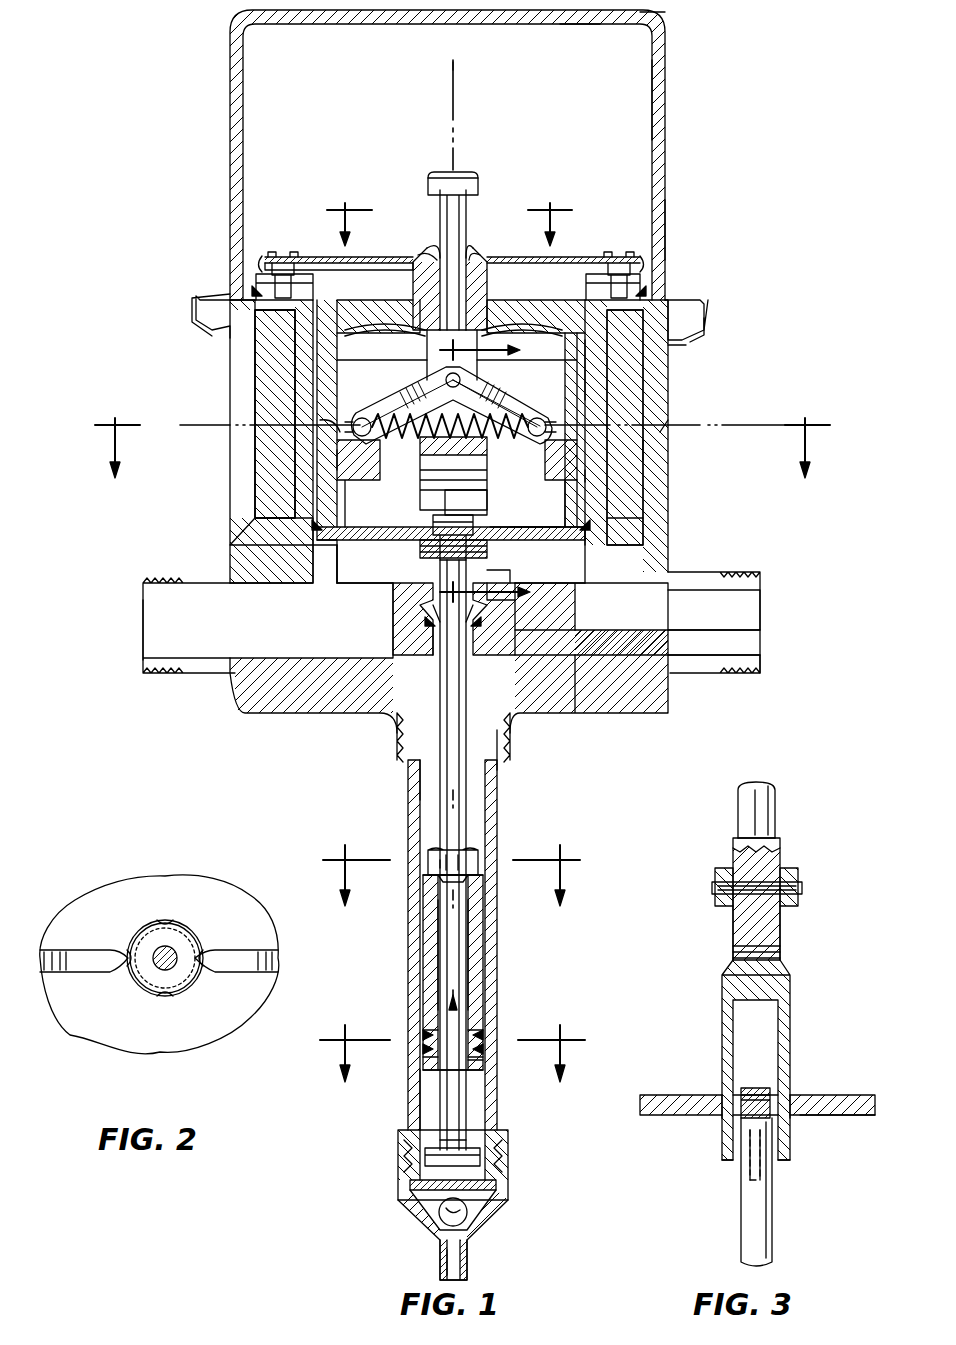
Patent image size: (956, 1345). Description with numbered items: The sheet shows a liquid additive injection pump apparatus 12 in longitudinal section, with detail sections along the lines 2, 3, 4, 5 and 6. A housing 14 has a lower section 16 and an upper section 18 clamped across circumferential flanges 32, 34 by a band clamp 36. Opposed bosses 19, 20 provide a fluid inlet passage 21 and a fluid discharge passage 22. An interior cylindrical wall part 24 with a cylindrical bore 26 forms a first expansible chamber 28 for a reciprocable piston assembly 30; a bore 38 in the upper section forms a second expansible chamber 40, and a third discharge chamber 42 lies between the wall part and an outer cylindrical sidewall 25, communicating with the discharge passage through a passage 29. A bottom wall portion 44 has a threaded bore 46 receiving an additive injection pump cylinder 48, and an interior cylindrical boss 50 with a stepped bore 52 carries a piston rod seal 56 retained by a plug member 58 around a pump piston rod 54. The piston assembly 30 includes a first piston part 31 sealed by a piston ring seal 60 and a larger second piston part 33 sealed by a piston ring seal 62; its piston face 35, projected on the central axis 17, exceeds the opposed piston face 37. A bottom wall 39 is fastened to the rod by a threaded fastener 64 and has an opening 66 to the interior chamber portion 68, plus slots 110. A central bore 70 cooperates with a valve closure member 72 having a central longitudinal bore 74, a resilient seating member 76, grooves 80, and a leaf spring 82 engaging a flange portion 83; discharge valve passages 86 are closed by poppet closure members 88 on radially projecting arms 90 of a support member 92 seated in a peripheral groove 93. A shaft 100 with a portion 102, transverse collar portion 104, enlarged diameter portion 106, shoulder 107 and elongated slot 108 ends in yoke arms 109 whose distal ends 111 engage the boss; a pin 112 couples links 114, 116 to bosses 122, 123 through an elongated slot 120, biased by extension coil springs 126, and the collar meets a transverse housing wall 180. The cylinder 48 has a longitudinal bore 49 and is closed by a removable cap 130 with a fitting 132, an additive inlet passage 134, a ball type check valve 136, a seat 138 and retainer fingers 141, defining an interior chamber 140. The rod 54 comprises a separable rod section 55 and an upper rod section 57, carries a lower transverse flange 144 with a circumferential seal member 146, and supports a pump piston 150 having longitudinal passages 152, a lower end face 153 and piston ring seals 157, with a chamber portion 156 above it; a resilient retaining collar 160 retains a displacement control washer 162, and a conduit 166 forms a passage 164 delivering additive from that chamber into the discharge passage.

In FIG. 1, the liquid additive injection pump apparatus 12 is at (672, 16).
In FIG. 1, the housing 14 is at (668, 228).
In FIG. 1, the lower section 16 is at (668, 404).
In FIG. 1, the longitudinal central axis 17 is at (455, 92).
In FIG. 1, the upper section 18 is at (663, 96).
In FIG. 1, the boss 19 is at (204, 576).
In FIG. 1, the boss 20 is at (694, 586).
In FIG. 1, the fluid inlet passage 21 is at (148, 650).
In FIG. 1, the fluid discharge passage 22 is at (702, 668).
In FIG. 1, the interior cylindrical wall part 24 is at (610, 446).
In FIG. 1, the outer cylindrical sidewall 25 is at (690, 420).
In FIG. 1, the cylindrical bore 26 is at (590, 476).
In FIG. 1, the first expansible chamber 28 is at (374, 578).
In FIG. 1, the passage 29 is at (636, 520).
In FIG. 1, the piston assembly 30 is at (593, 376).
In FIG. 3, the piston assembly 30 is at (826, 1122).
In FIG. 1, the first piston part 31 is at (330, 434).
In FIG. 1, the circumferential flange 32 is at (684, 340).
In FIG. 1, the second piston part 33 is at (330, 262).
In FIG. 2, the second piston part 33 is at (100, 882).
In FIG. 1, the circumferential flange 34 is at (680, 312).
In FIG. 1, the piston face 35 is at (402, 262).
In FIG. 1, the band clamp 36 is at (708, 332).
In FIG. 1, the piston face 37 is at (340, 554).
In FIG. 1, the bore 38 is at (646, 97).
In FIG. 1, the bottom wall 39 is at (506, 530).
In FIG. 3, the bottom wall 39 is at (840, 1098).
In FIG. 1, the second expansible chamber 40 is at (436, 84).
In FIG. 1, the third expansible fluid discharge chamber 42 is at (635, 368).
In FIG. 1, the bottom wall portion 44 is at (306, 716).
In FIG. 1, the threaded bore 46 is at (420, 760).
In FIG. 1, the additive injection pump cylinder 48 is at (500, 792).
In FIG. 1, the longitudinal bore 49 is at (484, 938).
In FIG. 1, the interior cylindrical boss 50 is at (392, 604).
In FIG. 1, the stepped bore 52 is at (430, 640).
In FIG. 1, the pump piston rod 54 is at (480, 680).
In FIG. 3, the pump piston rod 54 is at (740, 1216).
In FIG. 1, the separable rod section 55 is at (445, 934).
In FIG. 1, the piston rod seal 56 is at (510, 598).
In FIG. 1, the upper rod section 57 is at (430, 784).
In FIG. 1, the removable plug member 58 is at (484, 590).
In FIG. 1, the piston ring seal 60 is at (314, 530).
In FIG. 1, the piston ring seal 62 is at (240, 296).
In FIG. 1, the threaded fastener 64 is at (452, 526).
In FIG. 3, the threaded fastener 64 is at (760, 1085).
In FIG. 1, the opening 66 is at (344, 534).
In FIG. 1, the interior chamber portion 68 is at (360, 400).
In FIG. 1, the central bore 70 is at (428, 250).
In FIG. 1, the valve closure member 72 is at (486, 262).
In FIG. 2, the valve closure member 72 is at (170, 934).
In FIG. 1, the central longitudinal bore 74 is at (433, 250).
In FIG. 1, the resilient seating member 76 is at (406, 298).
In FIG. 1, the grooves 80 is at (418, 252).
In FIG. 2, the grooves 80 is at (154, 924).
In FIG. 1, the leaf spring 82 is at (506, 328).
In FIG. 1, the axially projecting flange portion 83 is at (296, 380).
In FIG. 1, the fluid discharge valve passages 86 is at (262, 268).
In FIG. 1, the poppet type valve closure members 88 is at (284, 252).
In FIG. 1, the radially projecting arms 90 is at (334, 262).
In FIG. 2, the radially projecting arms 90 is at (96, 950).
In FIG. 2, the support member 92 is at (180, 990).
In FIG. 2, the peripheral groove 93 is at (130, 1006).
In FIG. 1, the shaft 100 is at (420, 378).
In FIG. 3, the shaft 100 is at (795, 848).
In FIG. 1, the portion 102 is at (468, 205).
In FIG. 3, the portion 102 is at (776, 800).
In FIG. 1, the transverse collar portion 104 is at (462, 172).
In FIG. 3, the enlarged diameter portion 106 is at (732, 858).
In FIG. 1, the transverse shoulder 107 is at (500, 312).
In FIG. 3, the transverse shoulder 107 is at (742, 830).
In FIG. 1, the elongated slot 108 is at (447, 466).
In FIG. 3, the elongated slot 108 is at (770, 944).
In FIG. 1, the arms 109 is at (484, 484).
In FIG. 3, the arms 109 is at (722, 1006).
In FIG. 3, the slots 110 is at (784, 1110).
In FIG. 1, the distal ends 111 is at (420, 556).
In FIG. 3, the distal ends 111 is at (726, 1162).
In FIG. 3, the pin 112 is at (766, 900).
In FIG. 1, the links 114 is at (350, 416).
In FIG. 3, the links 114 is at (716, 878).
In FIG. 1, the links 116 is at (492, 372).
In FIG. 3, the links 116 is at (722, 908).
In FIG. 1, the elongated slot 120 is at (340, 458).
In FIG. 1, the boss 122 is at (372, 490).
In FIG. 1, the boss 123 is at (540, 526).
In FIG. 1, the extension coil springs 126 is at (420, 442).
In FIG. 1, the removable cap 130 is at (400, 1182).
In FIG. 1, the fitting 132 is at (476, 1260).
In FIG. 1, the liquid additive inlet passage 134 is at (444, 1260).
In FIG. 1, the ball type check valve 136 is at (478, 1210).
In FIG. 1, the seat 138 is at (440, 1214).
In FIG. 1, the interior chamber 140 is at (428, 1100).
In FIG. 1, the retainer fingers 141 is at (420, 1184).
In FIG. 1, the lower transverse flange 144 is at (500, 1156).
In FIG. 1, the circumferential seal member 146 is at (470, 1150).
In FIG. 1, the additive injection pump piston 150 is at (484, 1044).
In FIG. 1, the longitudinal passages 152 is at (440, 1078).
In FIG. 1, the lower transverse end face 153 is at (480, 1066).
In FIG. 1, the chamber portion 156 is at (496, 768).
In FIG. 1, the piston ring seals 157 is at (424, 1032).
In FIG. 1, the resilient retaining collar 160 is at (428, 852).
In FIG. 1, the pump displacement control washer 162 is at (428, 878).
In FIG. 1, the passage 164 is at (605, 662).
In FIG. 1, the conduit 166 is at (646, 630).
In FIG. 1, the transverse housing wall 180 is at (592, 26).
In FIG. 1, the section line 2— 2 is at (445, 215).
In FIG. 1, the section line 3— 3 is at (480, 470).
In FIG. 1, the section line 4— 4 is at (459, 438).
In FIG. 1, the section line 5— 5 is at (451, 1048).
In FIG. 1, the section line 6— 6 is at (451, 870).